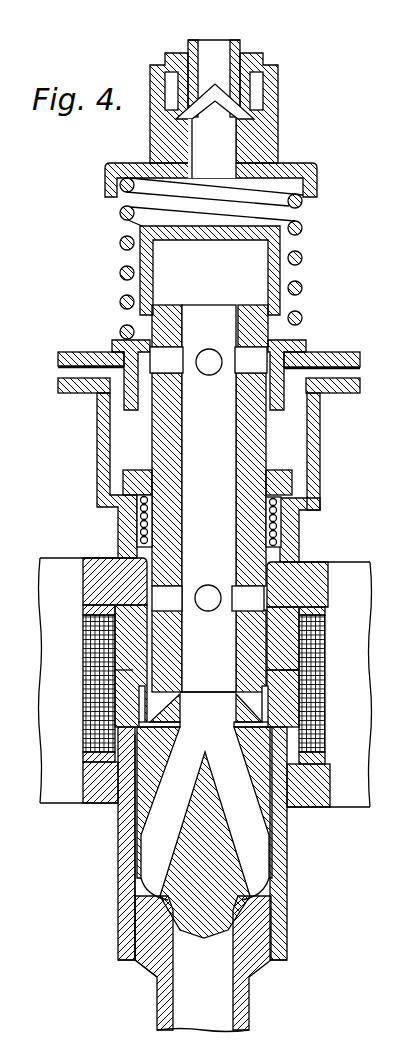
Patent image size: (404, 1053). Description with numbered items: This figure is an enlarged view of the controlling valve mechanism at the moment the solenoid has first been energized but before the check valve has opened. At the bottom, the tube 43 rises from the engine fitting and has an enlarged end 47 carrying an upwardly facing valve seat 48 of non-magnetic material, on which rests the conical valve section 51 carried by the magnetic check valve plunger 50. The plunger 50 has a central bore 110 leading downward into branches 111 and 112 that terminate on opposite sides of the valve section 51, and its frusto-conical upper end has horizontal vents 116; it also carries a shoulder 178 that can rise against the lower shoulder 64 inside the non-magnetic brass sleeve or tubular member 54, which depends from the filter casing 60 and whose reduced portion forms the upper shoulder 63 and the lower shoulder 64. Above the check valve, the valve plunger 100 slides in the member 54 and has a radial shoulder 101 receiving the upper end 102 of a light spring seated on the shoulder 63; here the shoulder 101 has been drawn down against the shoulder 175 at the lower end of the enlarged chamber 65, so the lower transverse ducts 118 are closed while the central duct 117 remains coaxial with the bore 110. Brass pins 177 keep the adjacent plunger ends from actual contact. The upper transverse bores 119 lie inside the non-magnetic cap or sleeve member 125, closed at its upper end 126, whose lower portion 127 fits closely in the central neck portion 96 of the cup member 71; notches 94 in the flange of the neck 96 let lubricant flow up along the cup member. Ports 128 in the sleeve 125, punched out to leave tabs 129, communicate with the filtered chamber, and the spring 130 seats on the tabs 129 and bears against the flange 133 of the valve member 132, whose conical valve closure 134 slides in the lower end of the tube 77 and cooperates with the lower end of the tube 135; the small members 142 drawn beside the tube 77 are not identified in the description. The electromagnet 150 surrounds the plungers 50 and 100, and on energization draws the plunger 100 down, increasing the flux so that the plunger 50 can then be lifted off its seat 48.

The tube 135 is at (228, 52).
The tube 77 is at (257, 54).
The packing ring 142 is at (168, 80).
The conical valve closure 134 is at (240, 104).
The valve member 132 is at (238, 107).
The flange 133 is at (317, 184).
The closed upper end 126 is at (152, 222).
The spring 130 is at (223, 269).
The cap or sleeve member 125 is at (286, 244).
The ports 128 is at (245, 308).
The transverse bores 119 is at (208, 498).
The transverse ducts 118 is at (206, 626).
The tabs or projections 129 is at (305, 340).
The central neck portion 96 is at (303, 360).
The cup member 71 is at (226, 341).
The filter casing 60 is at (230, 470).
The notches 94 is at (118, 401).
The valve plunger 100 is at (150, 444).
The lower portion 127 is at (258, 417).
The shoulder 175 is at (112, 484).
The central bore or duct 117 is at (150, 511).
The chamber 65 is at (319, 449).
The shoulder 101 is at (292, 483).
The spring 102 is at (283, 523).
The upper shoulder 63 is at (284, 539).
The electromagnet 150 is at (193, 664).
The lower shoulder 64 is at (100, 693).
The brass pins 177 is at (140, 701).
The shoulder 178 is at (298, 711).
The horizontal vents 116 is at (240, 716).
The central duct or bore 110 is at (86, 778).
The check valve plunger 50 is at (192, 879).
The sleeve or tubular member 54 is at (123, 848).
The branch 111 is at (120, 868).
The valve seat 48 is at (168, 892).
The branch 112 is at (203, 832).
The conical valve section 51 is at (139, 966).
The enlarged end 47 is at (211, 964).
The tube 43 is at (240, 1017).